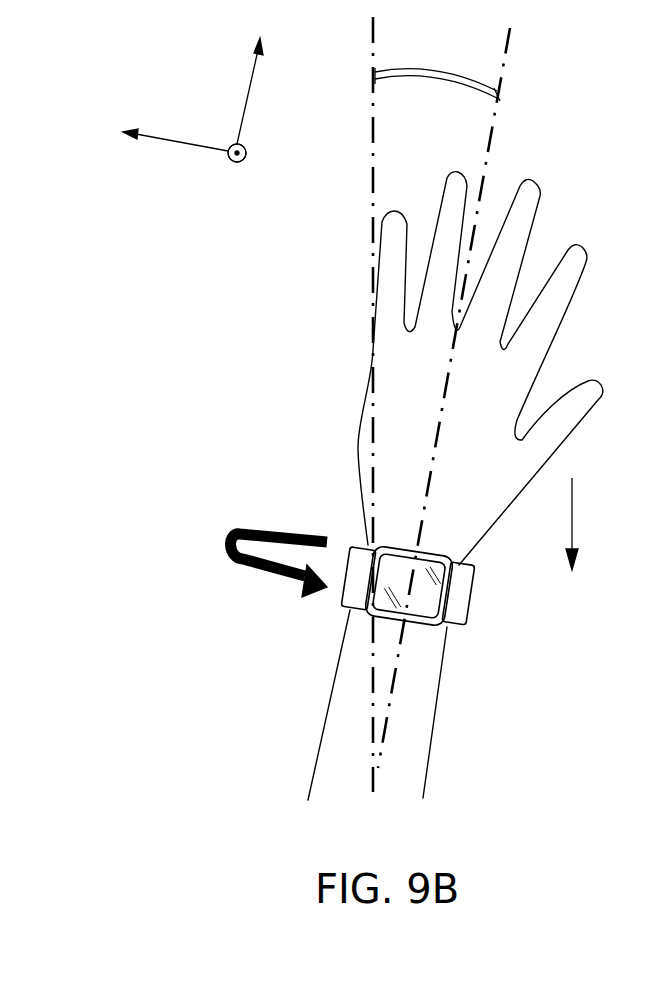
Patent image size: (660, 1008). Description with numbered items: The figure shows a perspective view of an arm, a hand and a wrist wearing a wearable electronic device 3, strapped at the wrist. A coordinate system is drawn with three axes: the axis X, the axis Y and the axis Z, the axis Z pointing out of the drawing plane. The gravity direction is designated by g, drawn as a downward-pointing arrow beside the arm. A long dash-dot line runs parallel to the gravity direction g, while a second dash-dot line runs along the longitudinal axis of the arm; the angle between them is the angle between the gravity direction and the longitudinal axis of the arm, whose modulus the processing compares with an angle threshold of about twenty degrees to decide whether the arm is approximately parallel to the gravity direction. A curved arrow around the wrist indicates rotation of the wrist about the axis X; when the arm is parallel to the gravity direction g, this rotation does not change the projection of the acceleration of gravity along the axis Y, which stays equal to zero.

The wearable electronic device (wristwatch) 3 is at (423, 613).
The gravity direction g is at (601, 502).
The axis X is at (259, 90).
The axis Y is at (163, 145).
The axis Z is at (243, 168).